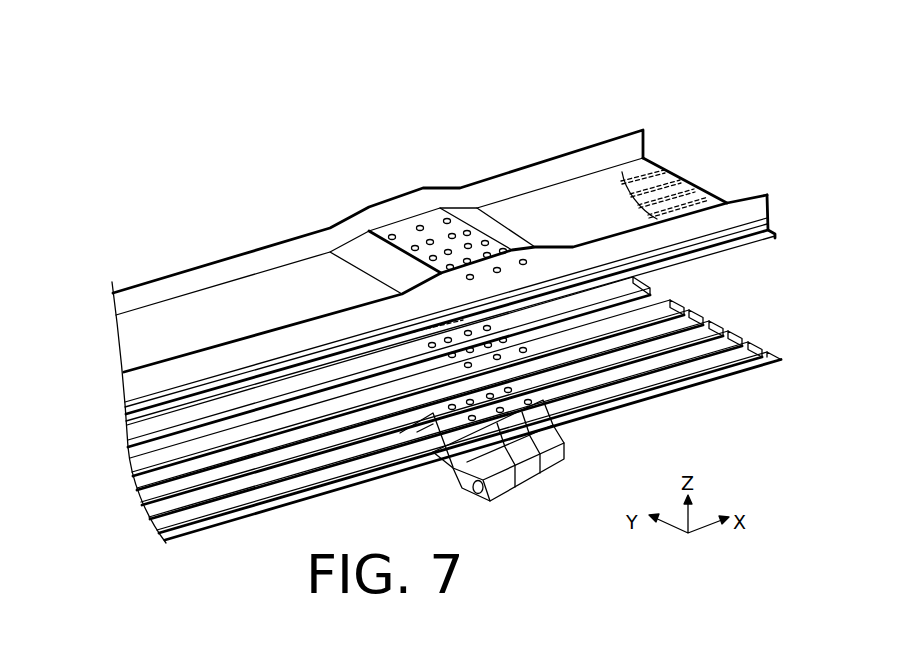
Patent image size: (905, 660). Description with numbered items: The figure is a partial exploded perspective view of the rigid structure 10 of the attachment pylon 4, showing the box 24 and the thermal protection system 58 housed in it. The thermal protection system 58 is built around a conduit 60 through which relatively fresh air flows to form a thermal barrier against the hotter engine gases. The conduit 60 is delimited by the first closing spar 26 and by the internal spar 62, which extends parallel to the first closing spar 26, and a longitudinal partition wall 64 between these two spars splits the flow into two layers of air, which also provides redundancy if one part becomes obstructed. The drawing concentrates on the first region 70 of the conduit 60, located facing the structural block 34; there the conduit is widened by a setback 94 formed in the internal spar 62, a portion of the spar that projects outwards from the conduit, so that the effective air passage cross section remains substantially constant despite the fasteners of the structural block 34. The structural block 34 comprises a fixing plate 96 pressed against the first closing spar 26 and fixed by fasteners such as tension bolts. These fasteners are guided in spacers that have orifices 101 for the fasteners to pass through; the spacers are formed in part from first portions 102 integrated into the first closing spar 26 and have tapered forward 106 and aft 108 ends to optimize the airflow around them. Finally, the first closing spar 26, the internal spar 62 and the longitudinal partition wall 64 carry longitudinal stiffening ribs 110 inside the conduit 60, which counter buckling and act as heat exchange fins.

The box 24 is at (594, 136).
The rigid structure 10 is at (379, 236).
The attachment pylon 4 is at (685, 180).
The thermal protection system 58 is at (432, 251).
The internal spar 62 is at (197, 301).
The setback 94 is at (400, 216).
The conduit 60 is at (729, 259).
The longitudinal stiffening ribs 110 is at (671, 169).
The first closing spar 26 is at (650, 301).
The aft end 108 is at (598, 387).
The orifices 101 is at (553, 397).
The fixing plate 96 is at (543, 429).
The first portions 102 is at (495, 415).
The structural block 34 is at (456, 477).
The forward end 106 is at (455, 453).
The first region 70 is at (441, 432).
The longitudinal partition wall 64 is at (152, 459).